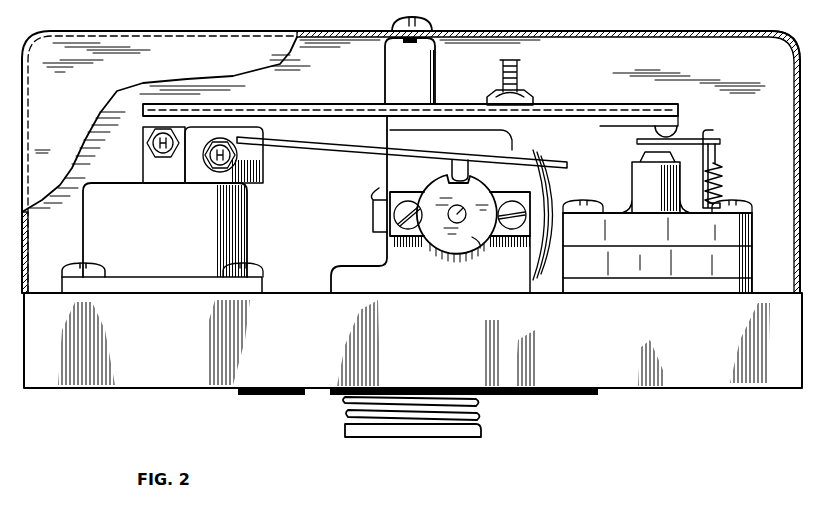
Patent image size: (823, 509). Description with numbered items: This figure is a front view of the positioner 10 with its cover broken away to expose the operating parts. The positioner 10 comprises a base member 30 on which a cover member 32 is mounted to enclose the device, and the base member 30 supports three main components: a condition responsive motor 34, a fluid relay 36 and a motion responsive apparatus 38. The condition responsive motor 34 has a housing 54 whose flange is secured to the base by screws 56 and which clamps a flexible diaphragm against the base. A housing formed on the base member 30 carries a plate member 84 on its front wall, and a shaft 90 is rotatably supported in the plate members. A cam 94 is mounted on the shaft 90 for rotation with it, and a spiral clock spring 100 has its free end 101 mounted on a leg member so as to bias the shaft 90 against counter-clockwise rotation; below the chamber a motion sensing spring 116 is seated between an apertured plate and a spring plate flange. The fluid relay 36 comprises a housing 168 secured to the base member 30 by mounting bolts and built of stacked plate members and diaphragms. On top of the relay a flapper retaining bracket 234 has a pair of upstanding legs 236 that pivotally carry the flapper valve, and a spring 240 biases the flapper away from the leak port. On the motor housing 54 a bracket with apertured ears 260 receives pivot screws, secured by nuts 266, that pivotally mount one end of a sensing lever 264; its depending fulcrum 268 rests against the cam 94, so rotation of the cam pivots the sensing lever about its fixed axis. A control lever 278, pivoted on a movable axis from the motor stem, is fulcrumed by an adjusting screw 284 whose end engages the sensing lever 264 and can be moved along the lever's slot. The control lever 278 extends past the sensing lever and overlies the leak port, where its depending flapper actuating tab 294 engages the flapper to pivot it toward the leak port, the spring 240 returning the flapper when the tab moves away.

The positioner 10 is at (170, 17).
The cover member 32 is at (238, 30).
The base member 30 is at (194, 362).
The control lever 278 is at (330, 104).
The adjusting screw 284 is at (520, 77).
The flapper actuating tab 294 is at (665, 136).
The upstanding legs 236 is at (709, 125).
The flapper retaining bracket 234 is at (637, 157).
The spring 240 is at (722, 168).
The fluid relay 36 is at (678, 229).
The housing 168 is at (748, 226).
The sensing lever 264 is at (376, 149).
The nuts 266 is at (238, 156).
The apertured ears 260 is at (238, 178).
The motion responsive apparatus 38 is at (372, 170).
The depending fulcrum 268 is at (446, 163).
The plate member 84 is at (523, 190).
The shaft 90 is at (455, 214).
The cam 94 is at (482, 248).
The spiral clock spring 100 is at (541, 210).
The free end 101 is at (366, 200).
The housing 54 is at (97, 234).
The condition responsive motor 34 is at (260, 247).
The screws 56 is at (76, 266).
The motion sensing spring 116 is at (348, 415).